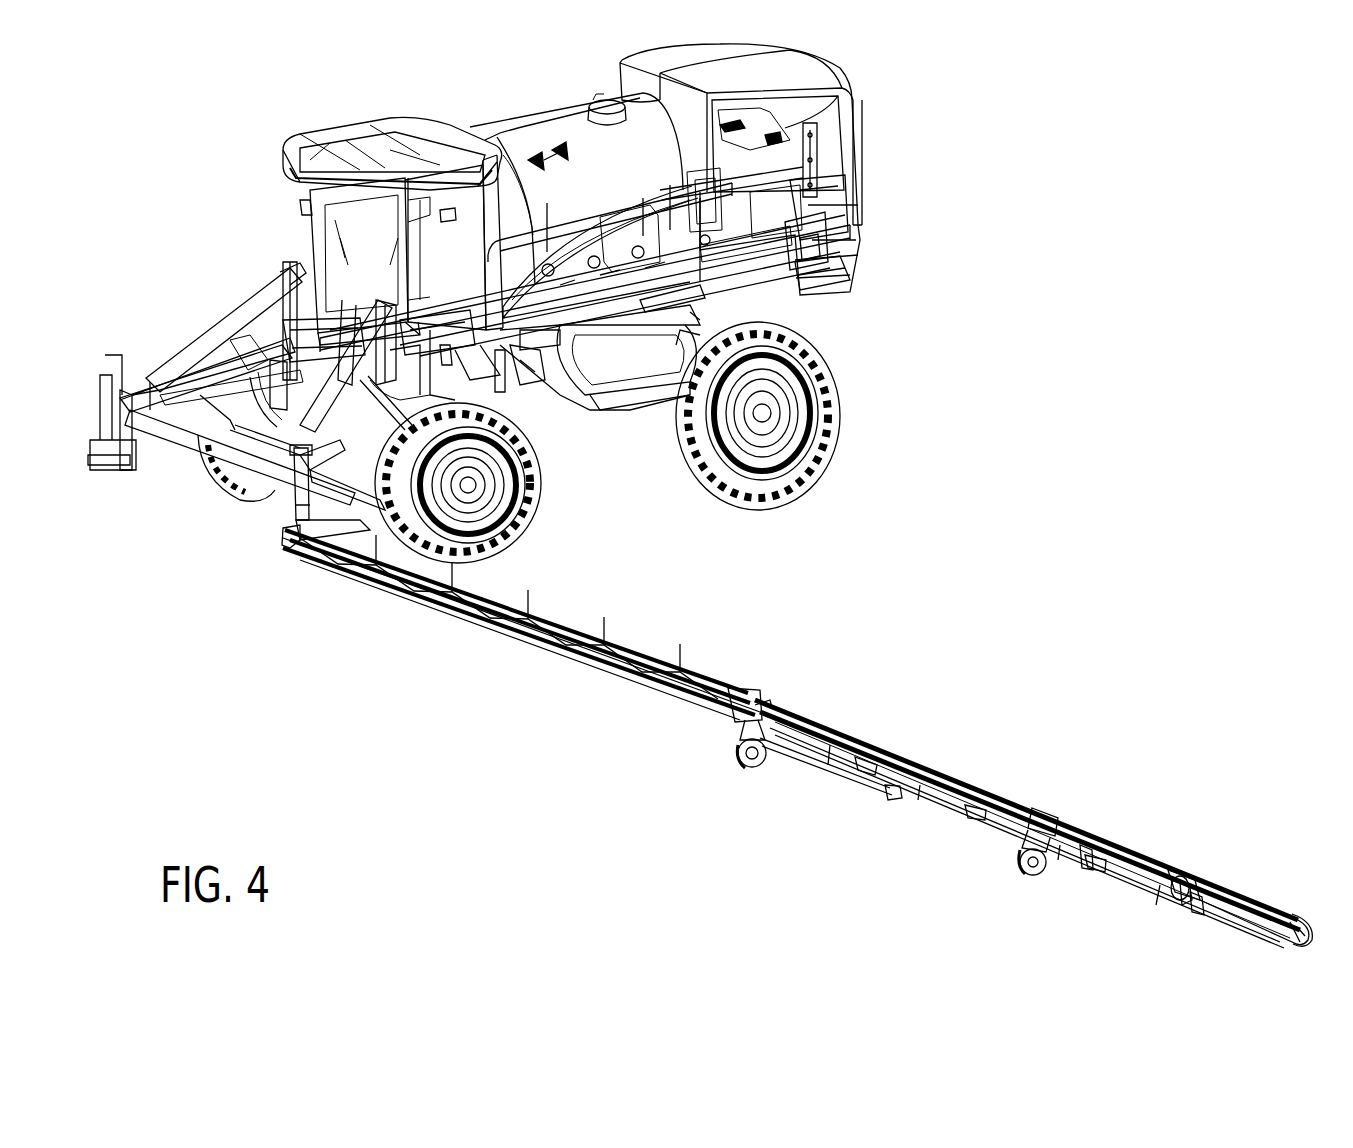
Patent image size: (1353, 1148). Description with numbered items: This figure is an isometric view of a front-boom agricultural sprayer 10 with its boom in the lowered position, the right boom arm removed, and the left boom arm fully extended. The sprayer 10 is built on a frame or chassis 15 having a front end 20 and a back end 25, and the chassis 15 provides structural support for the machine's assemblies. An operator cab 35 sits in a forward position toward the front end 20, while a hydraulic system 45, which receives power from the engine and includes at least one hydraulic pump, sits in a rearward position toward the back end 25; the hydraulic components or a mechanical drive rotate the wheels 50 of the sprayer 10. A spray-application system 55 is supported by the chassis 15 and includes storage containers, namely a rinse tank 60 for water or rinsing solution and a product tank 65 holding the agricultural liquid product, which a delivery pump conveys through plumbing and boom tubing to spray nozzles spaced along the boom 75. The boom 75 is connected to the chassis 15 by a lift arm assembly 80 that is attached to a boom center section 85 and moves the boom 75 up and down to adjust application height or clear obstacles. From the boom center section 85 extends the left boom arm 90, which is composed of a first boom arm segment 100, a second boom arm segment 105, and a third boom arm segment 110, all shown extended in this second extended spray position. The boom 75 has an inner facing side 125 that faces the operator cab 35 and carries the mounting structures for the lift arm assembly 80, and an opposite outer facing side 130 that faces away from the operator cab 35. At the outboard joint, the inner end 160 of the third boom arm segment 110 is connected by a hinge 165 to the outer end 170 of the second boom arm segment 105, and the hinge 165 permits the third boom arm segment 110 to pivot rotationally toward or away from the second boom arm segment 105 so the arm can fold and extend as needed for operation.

The sprayer 10 is at (335, 665).
The chassis 15 is at (768, 283).
The front end 20 is at (156, 472).
The back end 25 is at (876, 158).
The operator cab 35 is at (382, 130).
The hydraulic system 45 is at (848, 288).
The wheels 50 is at (678, 442).
The spray-application system 55 is at (528, 95).
The rinse tank 60 is at (640, 382).
The product tank 65 is at (580, 135).
The boom 75 is at (276, 562).
The lift arm assembly 80 is at (232, 327).
The boom center section 85 is at (197, 382).
The left boom arm 90 is at (722, 745).
The first boom arm segment 100 is at (492, 628).
The second boom arm segment 105 is at (938, 806).
The third boom arm segment 110 is at (1240, 922).
The inner facing side 125 is at (905, 748).
The outer facing side 130 is at (882, 795).
The inner end 160 is at (1070, 808).
The hinge 165 is at (1060, 812).
The outer end 170 is at (1040, 803).